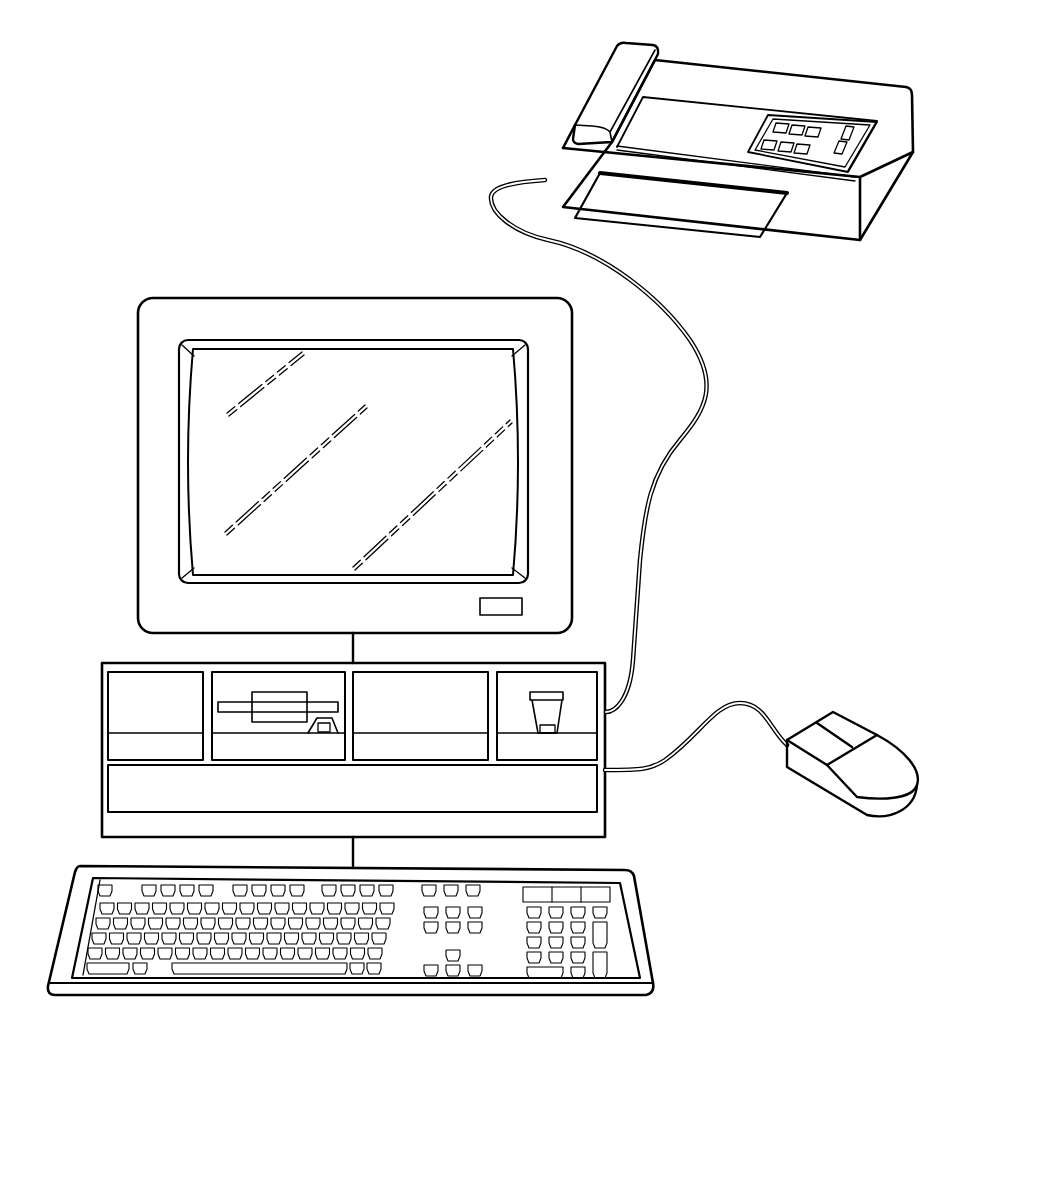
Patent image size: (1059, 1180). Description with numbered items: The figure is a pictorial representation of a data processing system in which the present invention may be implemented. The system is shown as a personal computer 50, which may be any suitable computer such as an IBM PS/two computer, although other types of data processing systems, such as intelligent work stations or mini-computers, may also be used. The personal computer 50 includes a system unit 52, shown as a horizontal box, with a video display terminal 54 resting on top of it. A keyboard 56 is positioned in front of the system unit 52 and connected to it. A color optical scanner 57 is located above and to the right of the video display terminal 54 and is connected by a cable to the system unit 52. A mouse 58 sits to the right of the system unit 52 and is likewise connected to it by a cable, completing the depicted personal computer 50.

The personal computer 50 is at (762, 973).
The system unit 52 is at (589, 666).
The video display terminal 54 is at (469, 298).
The keyboard 56 is at (545, 993).
The color optical scanner 57 is at (750, 86).
The mouse 58 is at (833, 720).